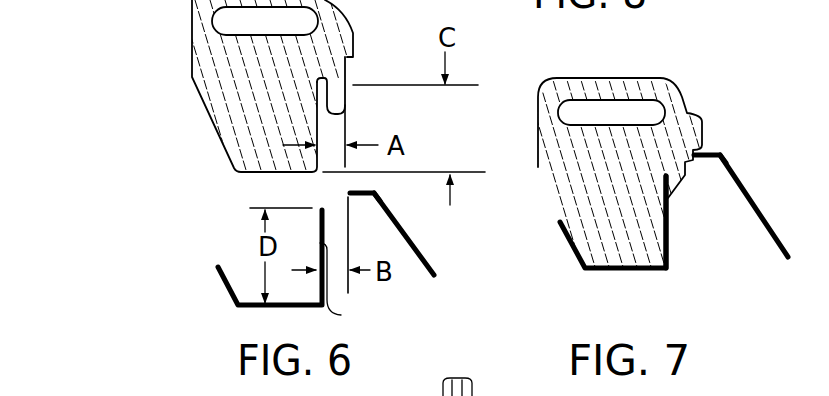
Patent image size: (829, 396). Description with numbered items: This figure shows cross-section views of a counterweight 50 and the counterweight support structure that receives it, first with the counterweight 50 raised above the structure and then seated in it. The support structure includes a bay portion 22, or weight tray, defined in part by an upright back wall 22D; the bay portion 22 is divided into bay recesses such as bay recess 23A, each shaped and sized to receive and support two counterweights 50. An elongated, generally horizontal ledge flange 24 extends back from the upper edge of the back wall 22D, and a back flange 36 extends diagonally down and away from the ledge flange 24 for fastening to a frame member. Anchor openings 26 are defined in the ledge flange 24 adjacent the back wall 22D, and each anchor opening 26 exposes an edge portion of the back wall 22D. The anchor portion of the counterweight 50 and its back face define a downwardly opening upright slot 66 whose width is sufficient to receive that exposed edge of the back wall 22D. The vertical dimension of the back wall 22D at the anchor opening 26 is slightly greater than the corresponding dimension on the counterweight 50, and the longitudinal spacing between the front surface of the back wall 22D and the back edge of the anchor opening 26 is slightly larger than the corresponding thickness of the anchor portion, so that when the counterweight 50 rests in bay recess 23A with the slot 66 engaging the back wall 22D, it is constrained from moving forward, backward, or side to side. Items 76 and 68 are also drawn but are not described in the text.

In FIG. 6, the counterweight 50 is at (188, 104).
In FIG. 6, the upright slot 66 is at (352, 86).
In FIG. 6, the ledge flange 24 is at (358, 190).
In FIG. 7, the ledge flange 24 is at (697, 152).
In FIG. 6, the back flange 36 is at (418, 250).
In FIG. 7, the back flange 36 is at (758, 188).
In FIG. 6, the anchor opening 26 is at (333, 200).
In FIG. 6, the bay recess 23A is at (212, 265).
In FIG. 6, the bay portion 22 is at (211, 288).
In FIG. 7, the bay portion 22 is at (679, 238).
In FIG. 6, the back wall 22D is at (341, 315).
In FIG. 7, the back wall 22D is at (671, 214).
In FIG. 8, the fastener 76 is at (453, 378).
In FIG. 8, the bracket 68 is at (498, 395).